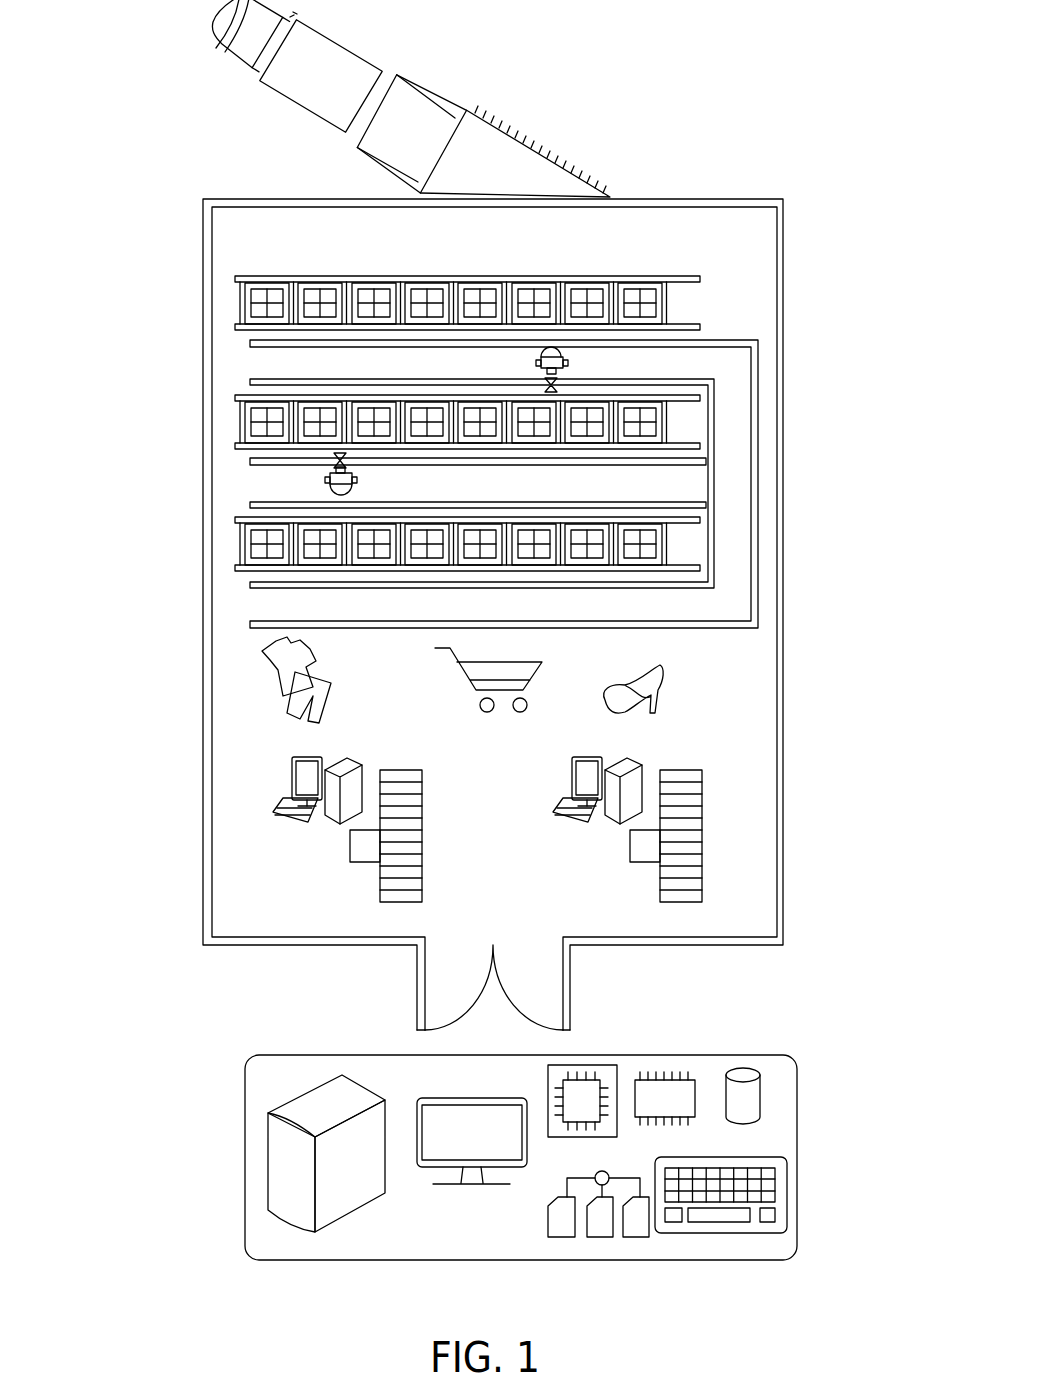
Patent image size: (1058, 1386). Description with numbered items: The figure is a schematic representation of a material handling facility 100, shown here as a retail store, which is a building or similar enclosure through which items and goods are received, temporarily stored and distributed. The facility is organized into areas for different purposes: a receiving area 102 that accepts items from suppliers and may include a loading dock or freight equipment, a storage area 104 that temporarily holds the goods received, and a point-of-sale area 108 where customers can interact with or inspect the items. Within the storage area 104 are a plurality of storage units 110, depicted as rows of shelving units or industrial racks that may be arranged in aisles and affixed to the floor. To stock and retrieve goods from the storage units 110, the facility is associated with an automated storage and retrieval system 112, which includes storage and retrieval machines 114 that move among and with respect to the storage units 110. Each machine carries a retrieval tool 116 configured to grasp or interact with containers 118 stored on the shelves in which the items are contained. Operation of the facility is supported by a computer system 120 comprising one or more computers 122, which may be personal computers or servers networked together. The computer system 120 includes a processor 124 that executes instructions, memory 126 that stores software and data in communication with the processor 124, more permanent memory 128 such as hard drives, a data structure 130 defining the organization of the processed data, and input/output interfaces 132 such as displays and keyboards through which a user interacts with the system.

The material handling facility 100 is at (176, 151).
The receiving area 102 is at (497, 182).
The storage area 104 is at (506, 255).
The point-of-sale area 108 is at (506, 857).
The storage units 110 is at (243, 296).
The automated storage and retrieval system 112 is at (765, 340).
The storage and retrieval machines 114 is at (566, 362).
The retrieval tool 116 is at (560, 391).
The containers 118 is at (370, 290).
The computer system 120 is at (245, 1096).
The computers 122 is at (278, 1181).
The processor 124 is at (592, 1066).
The memory 126 is at (665, 1080).
The permanent memory 128 is at (740, 1067).
The data structure 130 is at (563, 1238).
The input/output interfaces 132 is at (452, 1187).